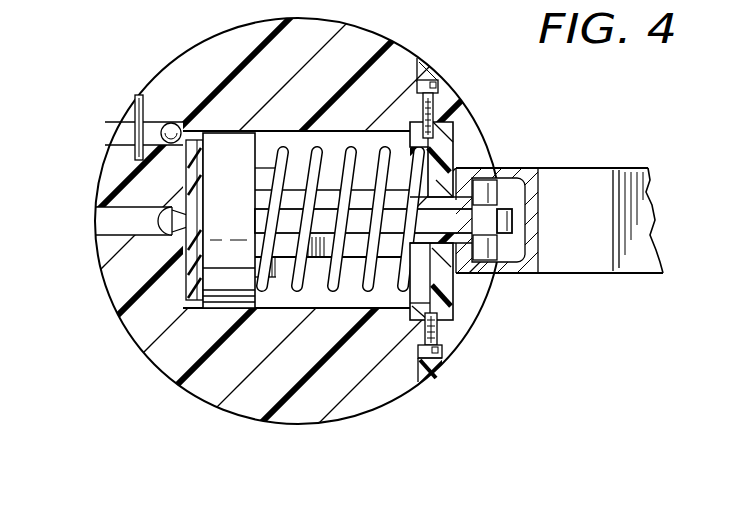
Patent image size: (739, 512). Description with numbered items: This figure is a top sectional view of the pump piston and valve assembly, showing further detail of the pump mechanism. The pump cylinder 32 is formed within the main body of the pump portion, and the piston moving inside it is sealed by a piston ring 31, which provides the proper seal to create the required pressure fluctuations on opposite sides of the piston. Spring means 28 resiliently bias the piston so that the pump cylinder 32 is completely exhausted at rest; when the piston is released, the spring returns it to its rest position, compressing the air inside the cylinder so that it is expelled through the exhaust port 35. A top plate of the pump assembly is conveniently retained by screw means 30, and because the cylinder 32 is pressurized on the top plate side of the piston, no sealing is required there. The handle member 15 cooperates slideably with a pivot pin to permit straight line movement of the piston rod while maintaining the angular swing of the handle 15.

The handle member 15 is at (647, 182).
The spring means 28 is at (295, 290).
The screw means 30 is at (440, 85).
The piston ring 31 is at (233, 131).
The pump cylinder 32 is at (337, 140).
The exhaust port 35 is at (112, 222).